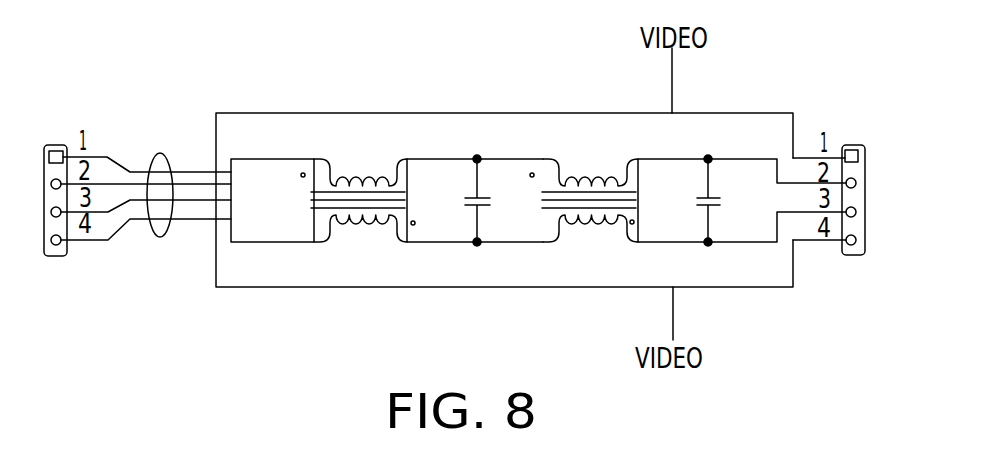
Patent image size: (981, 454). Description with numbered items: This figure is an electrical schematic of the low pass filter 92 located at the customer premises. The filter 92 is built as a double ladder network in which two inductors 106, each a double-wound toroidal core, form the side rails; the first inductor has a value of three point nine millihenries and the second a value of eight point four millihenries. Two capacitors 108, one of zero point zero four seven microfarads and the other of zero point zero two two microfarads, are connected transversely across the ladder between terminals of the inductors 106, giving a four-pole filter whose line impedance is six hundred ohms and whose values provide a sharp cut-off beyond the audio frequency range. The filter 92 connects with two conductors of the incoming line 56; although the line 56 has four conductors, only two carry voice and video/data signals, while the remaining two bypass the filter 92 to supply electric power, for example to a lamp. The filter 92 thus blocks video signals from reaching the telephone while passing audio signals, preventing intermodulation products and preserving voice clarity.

The incoming line 56 is at (159, 237).
The low pass filter 92 is at (803, 118).
The inductors 106 is at (312, 250).
The capacitors 108 is at (446, 217).